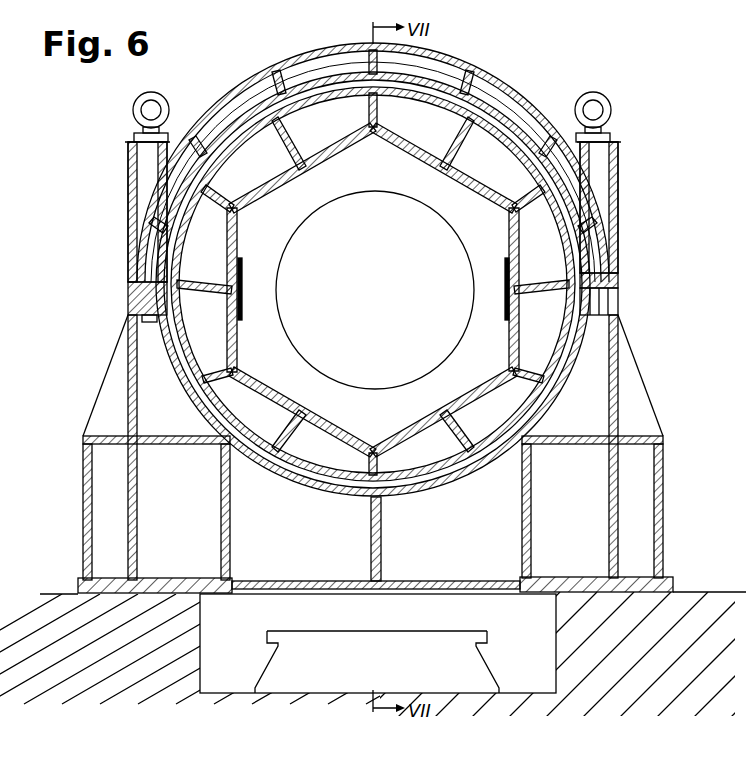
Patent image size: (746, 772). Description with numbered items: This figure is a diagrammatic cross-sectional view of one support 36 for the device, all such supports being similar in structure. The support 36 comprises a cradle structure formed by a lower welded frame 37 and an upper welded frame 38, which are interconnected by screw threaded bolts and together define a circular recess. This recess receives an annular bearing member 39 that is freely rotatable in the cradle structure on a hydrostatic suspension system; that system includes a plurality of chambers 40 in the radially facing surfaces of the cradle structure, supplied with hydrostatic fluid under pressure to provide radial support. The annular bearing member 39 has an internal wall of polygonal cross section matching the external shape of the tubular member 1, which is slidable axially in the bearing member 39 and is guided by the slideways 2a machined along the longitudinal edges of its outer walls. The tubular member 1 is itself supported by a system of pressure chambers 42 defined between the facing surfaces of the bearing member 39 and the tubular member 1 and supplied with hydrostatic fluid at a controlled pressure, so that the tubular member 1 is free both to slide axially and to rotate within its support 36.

The tubular member 1 is at (313, 345).
The slideway 2a is at (372, 434).
The support 36 is at (207, 98).
The lower welded frame 37 is at (672, 521).
The upper welded frame 38 is at (540, 100).
The annular bearing member 39 is at (511, 160).
The chambers 40 is at (340, 60).
The pressure chambers 42 is at (508, 338).